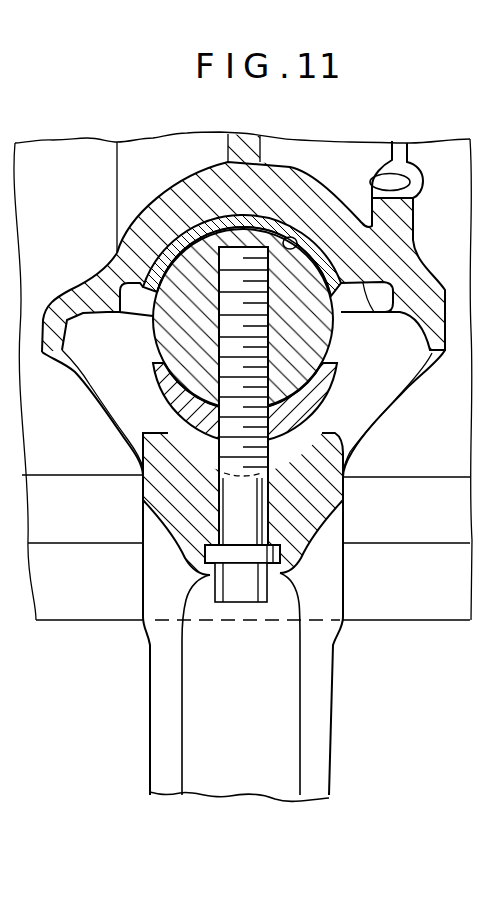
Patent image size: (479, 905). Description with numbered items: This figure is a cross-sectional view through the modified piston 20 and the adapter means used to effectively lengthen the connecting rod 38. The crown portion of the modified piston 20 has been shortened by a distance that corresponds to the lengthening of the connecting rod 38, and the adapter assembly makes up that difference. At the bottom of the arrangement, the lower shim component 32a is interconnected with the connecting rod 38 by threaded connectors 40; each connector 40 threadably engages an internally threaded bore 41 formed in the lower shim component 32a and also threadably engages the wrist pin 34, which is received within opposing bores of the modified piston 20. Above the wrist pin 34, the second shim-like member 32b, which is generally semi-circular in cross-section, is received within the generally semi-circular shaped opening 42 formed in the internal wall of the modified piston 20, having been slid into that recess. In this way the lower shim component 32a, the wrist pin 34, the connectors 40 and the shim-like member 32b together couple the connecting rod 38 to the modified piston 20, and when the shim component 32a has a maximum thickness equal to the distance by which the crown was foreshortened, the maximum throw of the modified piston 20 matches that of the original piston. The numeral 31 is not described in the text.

The modified piston 20 is at (383, 126).
The housing 31 is at (135, 395).
The lower shim component 32a is at (163, 413).
The second shim-like member 32b is at (173, 248).
The wrist pin 34 is at (320, 336).
The connecting rod 38 is at (329, 728).
The threaded connectors 40 is at (257, 503).
The internally threaded bores 41 is at (270, 418).
The semi-circular shaped opening 42 is at (297, 250).